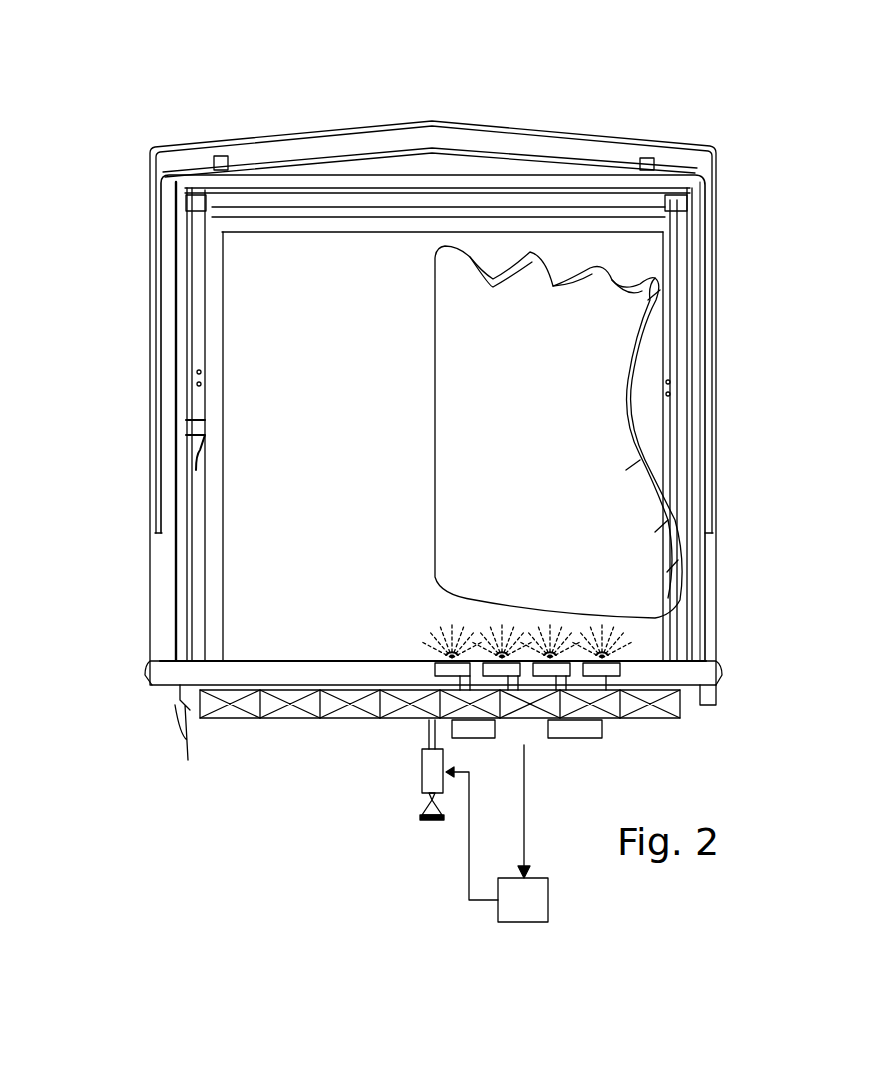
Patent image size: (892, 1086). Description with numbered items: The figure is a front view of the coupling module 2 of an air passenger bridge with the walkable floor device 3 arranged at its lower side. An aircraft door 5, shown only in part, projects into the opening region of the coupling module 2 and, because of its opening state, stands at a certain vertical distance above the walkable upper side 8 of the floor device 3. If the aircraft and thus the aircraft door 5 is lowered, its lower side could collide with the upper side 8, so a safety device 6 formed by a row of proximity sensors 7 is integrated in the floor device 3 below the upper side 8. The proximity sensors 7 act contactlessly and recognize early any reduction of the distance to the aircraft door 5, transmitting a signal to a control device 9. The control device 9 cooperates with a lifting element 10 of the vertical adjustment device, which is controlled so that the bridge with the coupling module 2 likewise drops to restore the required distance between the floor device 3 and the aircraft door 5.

The coupling module 2 is at (168, 122).
The floor device 3 is at (273, 670).
The aircraft door 5 is at (648, 324).
The safety device 6 is at (640, 644).
The proximity sensors 7 is at (460, 672).
The walkable upper side 8 is at (345, 656).
The control device 9 is at (535, 922).
The lifting element 10 is at (420, 779).